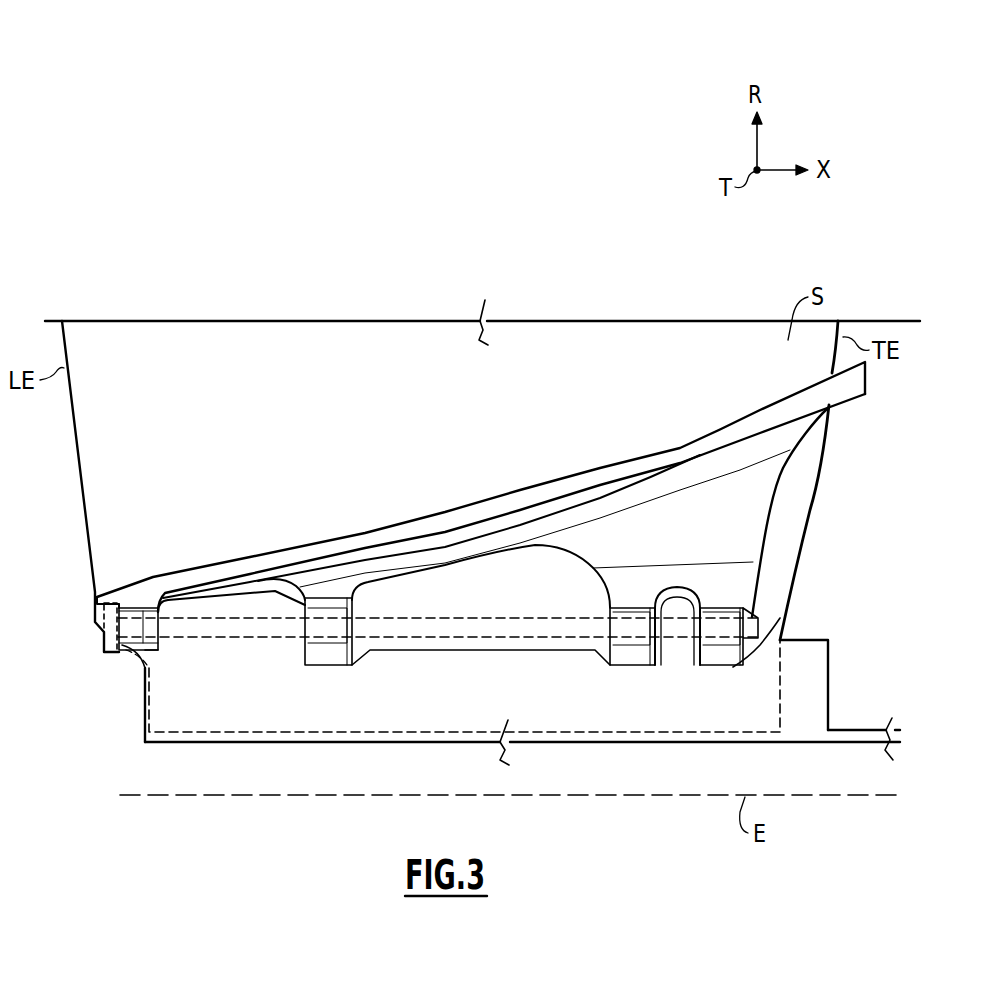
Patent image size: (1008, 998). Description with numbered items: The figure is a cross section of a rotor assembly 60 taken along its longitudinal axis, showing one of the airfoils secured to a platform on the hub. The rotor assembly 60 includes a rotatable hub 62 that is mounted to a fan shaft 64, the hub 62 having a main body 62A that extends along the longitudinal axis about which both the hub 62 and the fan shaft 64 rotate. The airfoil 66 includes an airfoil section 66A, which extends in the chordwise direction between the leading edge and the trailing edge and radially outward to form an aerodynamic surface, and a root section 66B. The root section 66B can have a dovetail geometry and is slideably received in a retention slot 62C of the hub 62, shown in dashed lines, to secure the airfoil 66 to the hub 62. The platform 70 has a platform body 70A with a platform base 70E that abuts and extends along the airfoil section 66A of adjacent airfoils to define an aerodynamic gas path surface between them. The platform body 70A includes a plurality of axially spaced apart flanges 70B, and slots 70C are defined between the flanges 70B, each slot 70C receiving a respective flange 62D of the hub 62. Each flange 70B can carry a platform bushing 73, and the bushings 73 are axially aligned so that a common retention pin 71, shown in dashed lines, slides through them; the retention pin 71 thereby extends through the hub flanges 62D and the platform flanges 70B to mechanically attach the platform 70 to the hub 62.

The rotor assembly 60 is at (100, 88).
The airfoil 66 is at (74, 312).
The airfoil section 66A is at (162, 336).
The root section 66B is at (780, 625).
The platform 70 is at (118, 578).
The platform body 70A is at (151, 582).
The flanges 70B is at (149, 665).
The slots 70C is at (305, 650).
The platform base 70E is at (193, 575).
The rotatable hub 62 is at (133, 728).
The main body 62A is at (197, 728).
The retention slots 62C is at (310, 730).
The flange 62D is at (247, 600).
The retention pin 71 is at (100, 648).
The platform bushing 73 is at (136, 645).
The fan shaft 64 is at (860, 727).